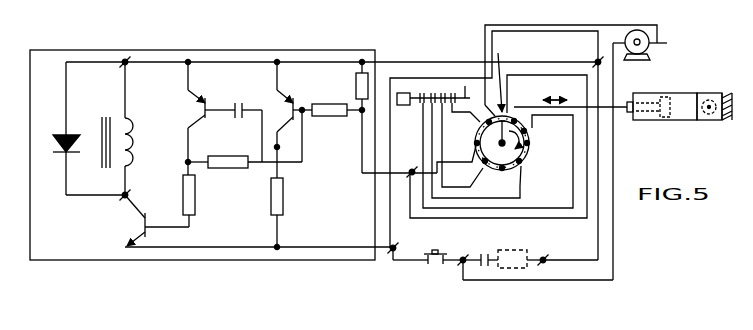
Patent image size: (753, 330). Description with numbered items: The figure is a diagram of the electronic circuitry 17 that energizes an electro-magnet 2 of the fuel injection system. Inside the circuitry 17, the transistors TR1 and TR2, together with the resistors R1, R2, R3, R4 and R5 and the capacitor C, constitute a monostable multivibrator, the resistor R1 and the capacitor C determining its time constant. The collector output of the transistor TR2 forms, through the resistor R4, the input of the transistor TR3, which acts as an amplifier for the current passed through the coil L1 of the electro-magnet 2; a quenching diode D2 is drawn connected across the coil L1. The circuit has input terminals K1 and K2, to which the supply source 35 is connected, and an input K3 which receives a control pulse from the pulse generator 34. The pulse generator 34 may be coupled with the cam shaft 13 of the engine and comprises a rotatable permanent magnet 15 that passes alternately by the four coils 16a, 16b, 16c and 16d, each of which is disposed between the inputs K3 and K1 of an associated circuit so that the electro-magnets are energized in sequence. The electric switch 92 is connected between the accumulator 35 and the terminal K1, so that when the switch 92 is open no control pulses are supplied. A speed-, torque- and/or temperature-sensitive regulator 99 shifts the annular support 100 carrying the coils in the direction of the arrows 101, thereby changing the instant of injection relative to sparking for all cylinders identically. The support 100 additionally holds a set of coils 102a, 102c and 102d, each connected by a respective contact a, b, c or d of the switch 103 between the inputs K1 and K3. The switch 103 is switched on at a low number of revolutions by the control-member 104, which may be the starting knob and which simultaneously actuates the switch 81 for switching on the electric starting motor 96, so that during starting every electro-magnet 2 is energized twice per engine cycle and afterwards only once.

The circuitry 17 is at (163, 49).
The electro-magnet 2 is at (114, 117).
The diode D2 is at (82, 128).
The coil L1 is at (138, 128).
The transistor TR1 is at (293, 120).
The transistor TR2 is at (210, 113).
The transistor TR3 is at (155, 218).
The capacitor C is at (247, 132).
The resistor R1 is at (290, 212).
The resistor R2 is at (348, 117).
The resistor R3 is at (338, 130).
The resistor R4 is at (199, 194).
The resistor R5 is at (245, 154).
The input terminal K1 is at (395, 230).
The input terminal K2 is at (596, 59).
The input K3 is at (412, 170).
The switch 103 is at (462, 45).
The control-member 104 is at (408, 112).
The switch 81 is at (471, 88).
The contact a is at (442, 91).
The contact b is at (453, 91).
The contact c is at (421, 91).
The contact d is at (432, 91).
The pulse generator 34 is at (501, 76).
The electric starting motor 96 is at (586, 152).
The regulator 99 is at (654, 93).
The annular support 100 is at (499, 172).
The cam shaft 13 is at (502, 143).
The rotatable permanent magnet 15 is at (500, 136).
The coil 16a is at (498, 146).
The coil 16b is at (533, 143).
The coil 16c is at (521, 188).
The coil 16d is at (460, 151).
The arrows 101 is at (476, 125).
The coil 102a is at (465, 178).
The coil 102c is at (528, 130).
The coil 102d is at (544, 169).
The supply source 35 is at (527, 251).
The electric switch 92 is at (431, 263).